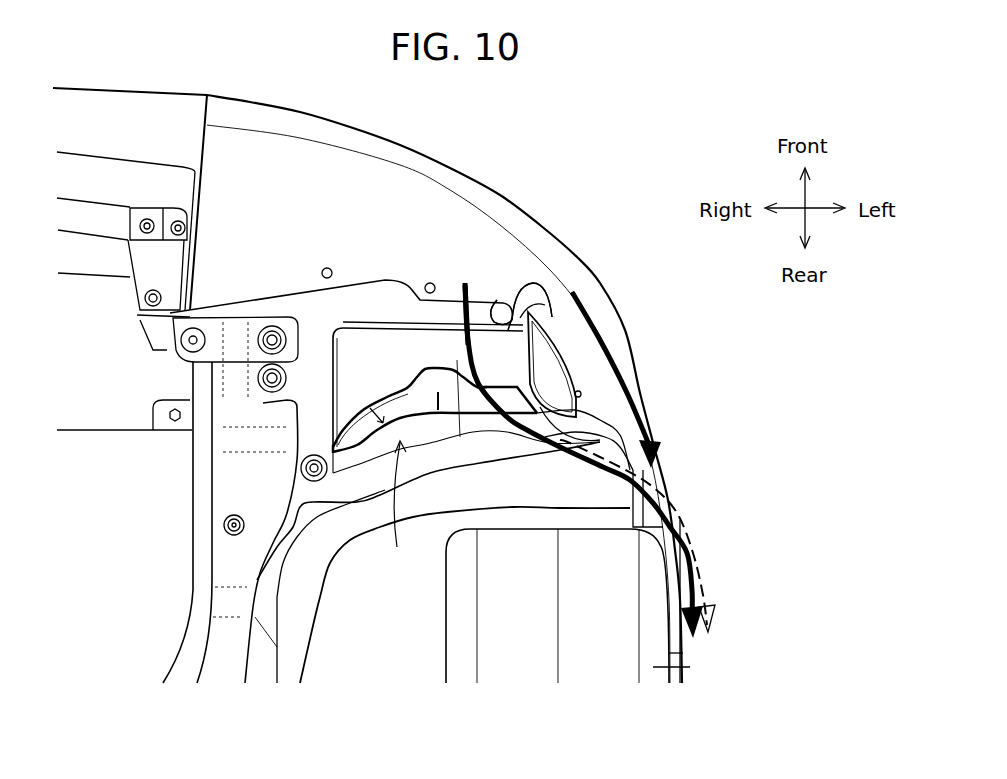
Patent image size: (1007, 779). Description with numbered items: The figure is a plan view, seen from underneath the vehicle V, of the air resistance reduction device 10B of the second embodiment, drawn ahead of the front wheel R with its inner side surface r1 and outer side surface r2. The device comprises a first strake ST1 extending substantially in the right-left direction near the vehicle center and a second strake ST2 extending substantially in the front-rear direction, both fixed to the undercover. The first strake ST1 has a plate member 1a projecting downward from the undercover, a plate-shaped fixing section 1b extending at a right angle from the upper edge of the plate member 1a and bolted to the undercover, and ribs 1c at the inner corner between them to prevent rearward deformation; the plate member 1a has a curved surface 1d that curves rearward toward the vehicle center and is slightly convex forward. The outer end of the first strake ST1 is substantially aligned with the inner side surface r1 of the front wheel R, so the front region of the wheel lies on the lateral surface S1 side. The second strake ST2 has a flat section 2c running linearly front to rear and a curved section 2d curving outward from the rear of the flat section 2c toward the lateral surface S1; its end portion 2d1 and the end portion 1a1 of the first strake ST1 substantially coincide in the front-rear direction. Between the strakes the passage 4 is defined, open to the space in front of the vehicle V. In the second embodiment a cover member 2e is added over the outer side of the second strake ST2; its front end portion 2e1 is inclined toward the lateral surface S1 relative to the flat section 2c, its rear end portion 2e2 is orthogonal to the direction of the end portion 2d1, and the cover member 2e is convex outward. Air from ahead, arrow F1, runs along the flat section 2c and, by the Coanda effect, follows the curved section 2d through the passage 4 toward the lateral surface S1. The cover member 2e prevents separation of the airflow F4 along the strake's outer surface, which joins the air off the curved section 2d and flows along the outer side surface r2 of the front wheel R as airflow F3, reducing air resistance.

The vehicle V is at (413, 137).
The plate member 1a is at (425, 425).
The end portion of the first strake 1a1 is at (471, 430).
The fixing section 1b is at (457, 360).
The ribs 1c is at (363, 400).
The curved surface 1d is at (383, 380).
The flat section 2c is at (497, 300).
The curved section 2d is at (576, 410).
The end portion of the curved section 2d1 is at (585, 392).
The cover member 2e is at (573, 336).
The front end portion of the cover member 2e1 is at (532, 312).
The rear end portion of the cover member 2e2 is at (580, 360).
The passage 4 is at (501, 420).
The air resistance reduction device 10B is at (558, 289).
The first strake ST1 is at (393, 512).
The second strake ST2 is at (603, 285).
The airflow F1 is at (707, 518).
The airflow F3 is at (693, 558).
The airflow F4 is at (657, 430).
The lateral surface S1 is at (684, 585).
The inner side surface of the front wheel r1 is at (443, 615).
The outer side surface of the front wheel r2 is at (674, 654).
The front wheel R is at (655, 667).